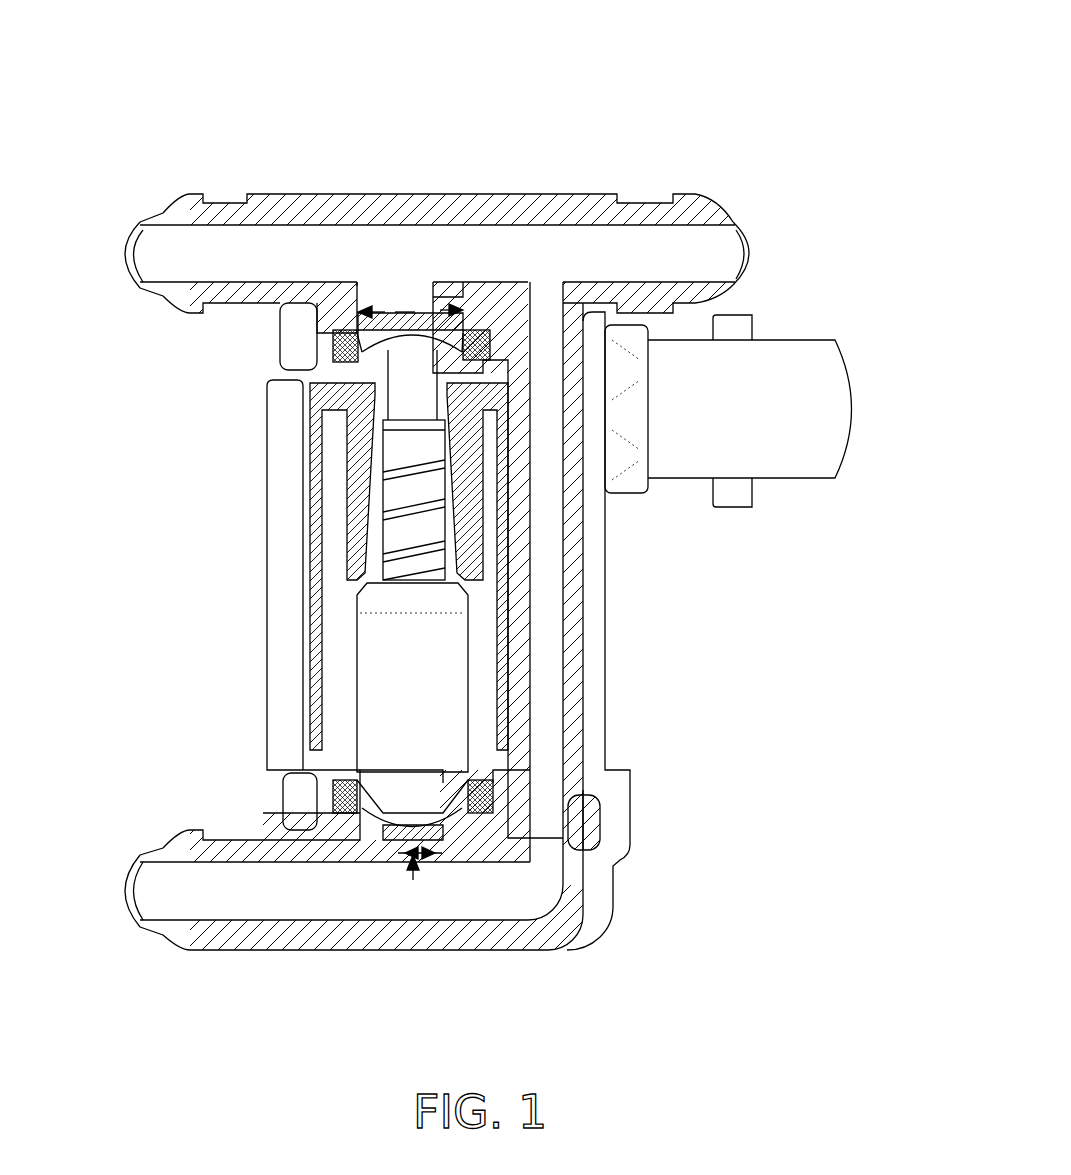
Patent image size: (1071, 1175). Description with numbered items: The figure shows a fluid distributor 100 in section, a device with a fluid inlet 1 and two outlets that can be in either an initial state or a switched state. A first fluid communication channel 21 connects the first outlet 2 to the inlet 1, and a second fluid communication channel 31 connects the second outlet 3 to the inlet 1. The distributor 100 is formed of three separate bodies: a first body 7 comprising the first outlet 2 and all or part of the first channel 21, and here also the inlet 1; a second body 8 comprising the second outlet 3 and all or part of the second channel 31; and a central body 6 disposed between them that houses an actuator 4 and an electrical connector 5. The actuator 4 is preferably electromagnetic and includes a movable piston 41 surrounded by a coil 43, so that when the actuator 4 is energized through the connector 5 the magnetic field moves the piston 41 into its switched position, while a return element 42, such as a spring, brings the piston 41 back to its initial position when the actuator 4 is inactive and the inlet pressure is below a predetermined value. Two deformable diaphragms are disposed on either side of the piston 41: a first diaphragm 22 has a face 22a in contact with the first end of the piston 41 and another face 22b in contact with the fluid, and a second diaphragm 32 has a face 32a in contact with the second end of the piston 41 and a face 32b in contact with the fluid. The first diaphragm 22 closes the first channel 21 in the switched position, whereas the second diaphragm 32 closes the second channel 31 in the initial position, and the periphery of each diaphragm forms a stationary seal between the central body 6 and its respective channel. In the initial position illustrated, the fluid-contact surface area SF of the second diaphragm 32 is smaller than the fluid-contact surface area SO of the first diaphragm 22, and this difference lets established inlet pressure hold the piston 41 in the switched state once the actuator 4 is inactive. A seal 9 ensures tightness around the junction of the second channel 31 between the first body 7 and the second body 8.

The fluid distributor 100 is at (766, 110).
The fluid inlet 1 is at (697, 253).
The first outlet 2 is at (170, 256).
The first fluid communication channel 21 is at (517, 258).
The first diaphragm 22 is at (333, 337).
The face of the first diaphragm 22a is at (398, 343).
The face of the first diaphragm 22b is at (372, 300).
The first body 7 is at (352, 268).
The fluid-contact surface area of the first diaphragm SO is at (406, 298).
The second outlet 3 is at (170, 888).
The second body 8 is at (492, 935).
The second fluid communication channel 31 is at (515, 893).
The second diaphragm 32 is at (383, 852).
The face of the second diaphragm 32a is at (390, 809).
The face of the second diaphragm 32b is at (412, 850).
The fluid-contact surface area of the second diaphragm SF is at (430, 862).
The actuator 4 is at (700, 548).
The movable piston 41 is at (470, 712).
The return element 42 is at (448, 515).
The coil 43 is at (478, 565).
The electrical connector 5 is at (800, 408).
The central body 6 is at (290, 545).
The seal 9 is at (592, 808).